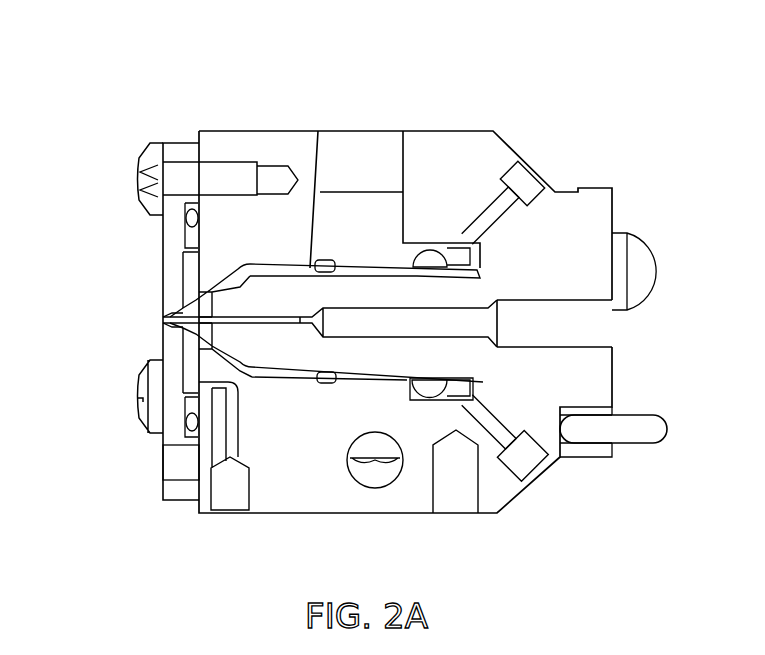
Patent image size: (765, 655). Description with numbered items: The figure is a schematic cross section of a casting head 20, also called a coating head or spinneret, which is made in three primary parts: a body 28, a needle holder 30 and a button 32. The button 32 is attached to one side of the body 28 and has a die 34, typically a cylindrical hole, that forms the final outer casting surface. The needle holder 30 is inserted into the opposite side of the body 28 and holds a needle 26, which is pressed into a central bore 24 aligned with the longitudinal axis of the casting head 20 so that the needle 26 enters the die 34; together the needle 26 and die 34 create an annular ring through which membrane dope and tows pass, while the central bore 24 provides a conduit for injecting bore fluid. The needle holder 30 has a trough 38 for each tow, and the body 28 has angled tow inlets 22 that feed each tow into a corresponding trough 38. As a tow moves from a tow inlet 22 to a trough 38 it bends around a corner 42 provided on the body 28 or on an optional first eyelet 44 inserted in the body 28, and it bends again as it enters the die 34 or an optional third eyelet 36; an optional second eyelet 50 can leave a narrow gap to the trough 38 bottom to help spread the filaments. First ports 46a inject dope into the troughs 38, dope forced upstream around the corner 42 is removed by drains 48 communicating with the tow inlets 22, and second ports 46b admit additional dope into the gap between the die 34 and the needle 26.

The casting head 20 is at (117, 530).
The tow inlet 22 is at (532, 183).
The central bore 24 is at (587, 342).
The needle 26 is at (163, 316).
The body 28 is at (467, 131).
The needle holder 30 is at (613, 398).
The button 32 is at (163, 235).
The die 34 is at (163, 325).
The third eyelet 36 is at (195, 340).
The trough 38 is at (378, 262).
The corner 42 is at (447, 248).
The first eyelet 44 is at (424, 246).
The first ports 46a is at (387, 140).
The second ports 46b is at (242, 500).
The drains 48 is at (468, 500).
The second eyelet 50 is at (325, 260).